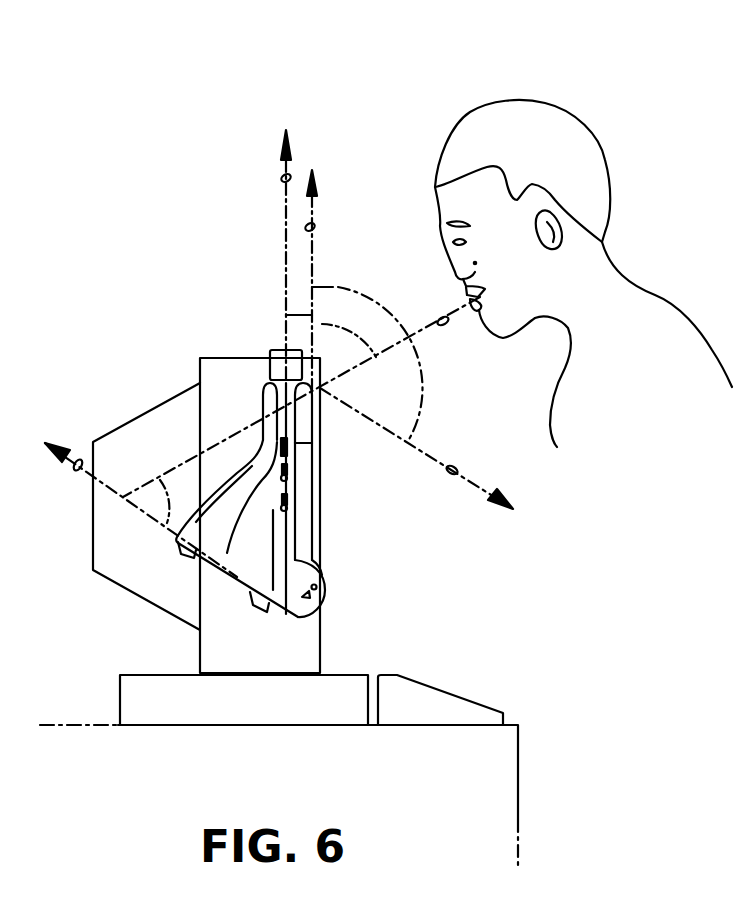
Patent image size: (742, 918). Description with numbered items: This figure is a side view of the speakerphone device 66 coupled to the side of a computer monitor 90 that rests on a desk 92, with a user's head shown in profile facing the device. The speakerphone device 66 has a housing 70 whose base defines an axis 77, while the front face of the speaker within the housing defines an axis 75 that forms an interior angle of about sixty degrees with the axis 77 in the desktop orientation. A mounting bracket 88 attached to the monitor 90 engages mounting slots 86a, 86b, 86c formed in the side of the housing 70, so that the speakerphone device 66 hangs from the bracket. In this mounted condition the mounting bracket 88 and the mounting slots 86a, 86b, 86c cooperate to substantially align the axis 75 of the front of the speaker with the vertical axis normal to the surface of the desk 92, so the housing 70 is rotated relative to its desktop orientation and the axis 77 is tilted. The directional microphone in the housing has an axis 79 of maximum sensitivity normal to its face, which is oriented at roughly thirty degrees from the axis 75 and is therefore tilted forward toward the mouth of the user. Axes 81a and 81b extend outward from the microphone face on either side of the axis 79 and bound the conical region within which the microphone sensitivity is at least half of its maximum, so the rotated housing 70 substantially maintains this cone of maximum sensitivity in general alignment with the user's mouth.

The speakerphone device 66 is at (366, 553).
The housing 70 is at (326, 594).
The axis 75 is at (290, 175).
The axis 77 is at (76, 472).
The axis 79 is at (438, 320).
The axis 81a is at (457, 468).
The axis 81b is at (315, 224).
The mounting slot 86a is at (288, 450).
The mounting slot 86b is at (288, 471).
The mounting slot 86c is at (288, 502).
The mounting bracket 88 is at (272, 352).
The monitor 90 is at (158, 407).
The desk 92 is at (520, 785).